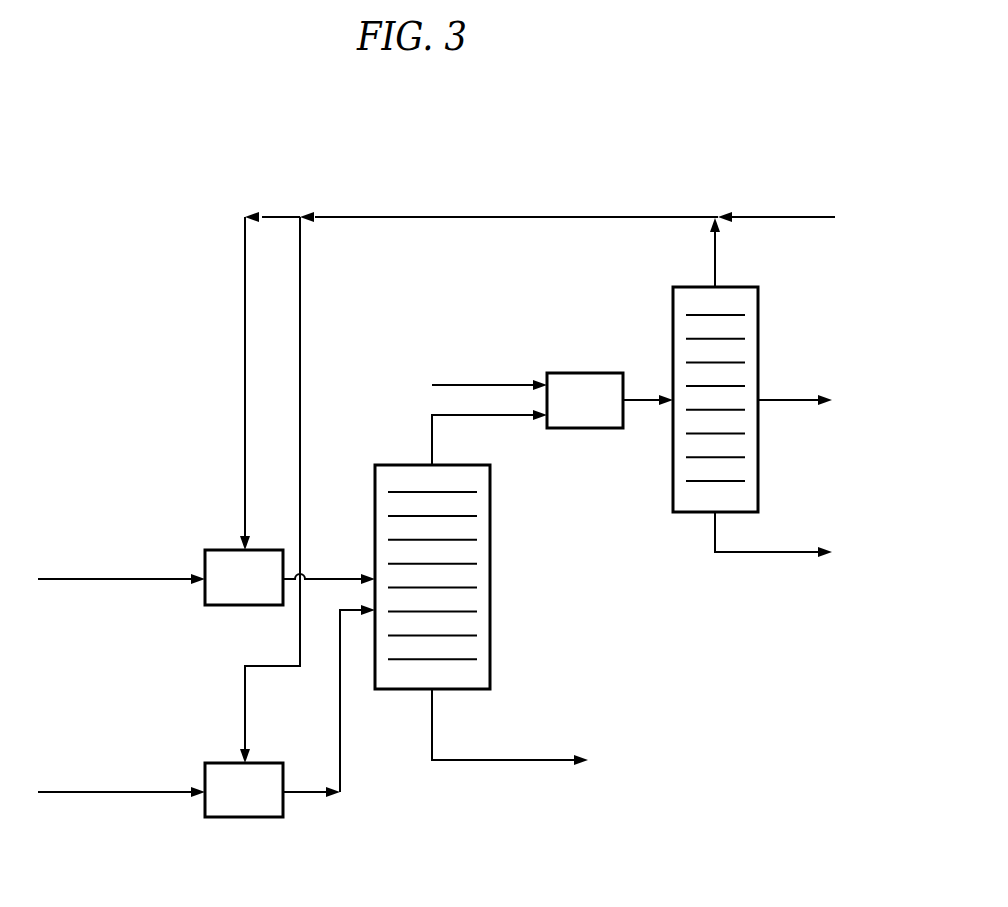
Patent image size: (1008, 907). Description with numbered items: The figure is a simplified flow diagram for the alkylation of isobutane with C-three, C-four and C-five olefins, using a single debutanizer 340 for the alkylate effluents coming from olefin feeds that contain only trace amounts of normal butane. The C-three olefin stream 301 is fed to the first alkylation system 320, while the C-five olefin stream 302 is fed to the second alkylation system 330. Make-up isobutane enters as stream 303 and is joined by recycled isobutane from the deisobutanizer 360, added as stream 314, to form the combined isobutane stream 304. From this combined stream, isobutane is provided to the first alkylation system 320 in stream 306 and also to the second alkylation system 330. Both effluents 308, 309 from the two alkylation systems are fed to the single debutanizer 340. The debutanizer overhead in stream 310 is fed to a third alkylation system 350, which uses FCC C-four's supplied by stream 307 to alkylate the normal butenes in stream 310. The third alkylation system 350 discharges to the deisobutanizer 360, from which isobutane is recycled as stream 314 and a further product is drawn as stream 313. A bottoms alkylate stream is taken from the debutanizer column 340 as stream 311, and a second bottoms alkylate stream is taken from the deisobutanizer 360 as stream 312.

The C3 olefin stream 301 is at (107, 579).
The C5 olefin stream 302 is at (120, 792).
The make up isobutane stream 303 is at (775, 217).
The combined isobutane stream 304 is at (418, 217).
The isobutane stream to first alkylation system 306 is at (243, 382).
The FCC C4 stream 307 is at (470, 385).
The first alkylation effluent 308 is at (340, 578).
The second alkylation effluent 309 is at (300, 793).
The debutanizer overhead stream 310 is at (450, 418).
The debutanizer bottoms alkylate stream 311 is at (505, 760).
The deisobutanizer bottoms alkylate stream 312 is at (722, 555).
The separator side stream 313 is at (778, 400).
The recycled isobutane stream 314 is at (718, 268).
The first alkylation system 320 is at (244, 577).
The second alkylation system 330 is at (244, 790).
The debutanizer 340 is at (373, 481).
The third alkylation system 350 is at (585, 400).
The deisobutanizer 360 is at (687, 287).